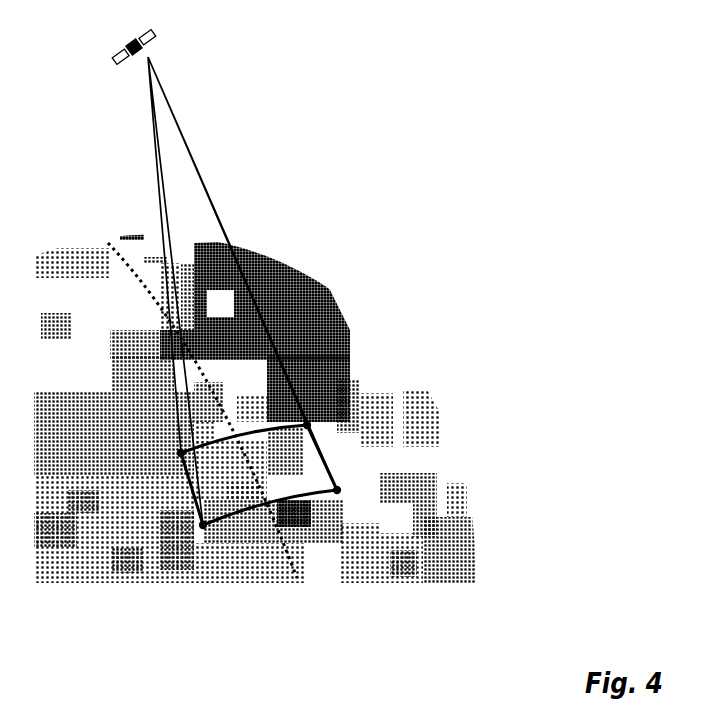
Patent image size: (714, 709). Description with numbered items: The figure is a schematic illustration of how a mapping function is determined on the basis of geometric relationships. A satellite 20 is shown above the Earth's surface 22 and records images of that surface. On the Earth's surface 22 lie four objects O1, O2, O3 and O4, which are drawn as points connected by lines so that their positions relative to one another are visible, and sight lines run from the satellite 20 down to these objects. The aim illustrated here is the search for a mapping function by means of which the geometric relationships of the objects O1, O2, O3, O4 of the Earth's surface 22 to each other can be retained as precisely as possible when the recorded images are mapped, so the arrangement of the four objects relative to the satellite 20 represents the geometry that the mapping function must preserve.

The satellite 20 is at (149, 41).
The Earth's surface 22 is at (336, 308).
The object O1 is at (181, 453).
The object O2 is at (203, 525).
The object O3 is at (307, 425).
The object O4 is at (337, 490).